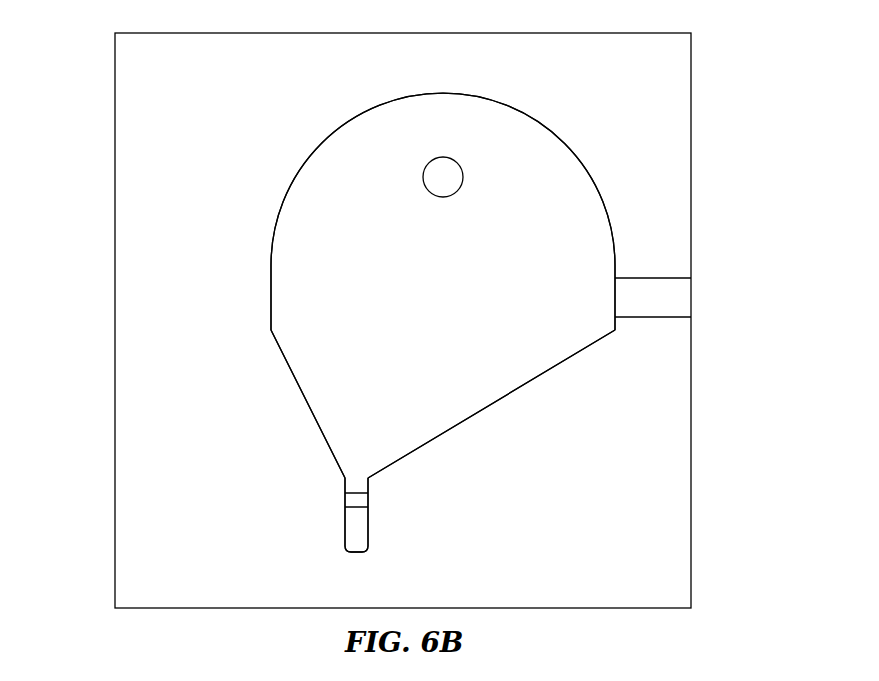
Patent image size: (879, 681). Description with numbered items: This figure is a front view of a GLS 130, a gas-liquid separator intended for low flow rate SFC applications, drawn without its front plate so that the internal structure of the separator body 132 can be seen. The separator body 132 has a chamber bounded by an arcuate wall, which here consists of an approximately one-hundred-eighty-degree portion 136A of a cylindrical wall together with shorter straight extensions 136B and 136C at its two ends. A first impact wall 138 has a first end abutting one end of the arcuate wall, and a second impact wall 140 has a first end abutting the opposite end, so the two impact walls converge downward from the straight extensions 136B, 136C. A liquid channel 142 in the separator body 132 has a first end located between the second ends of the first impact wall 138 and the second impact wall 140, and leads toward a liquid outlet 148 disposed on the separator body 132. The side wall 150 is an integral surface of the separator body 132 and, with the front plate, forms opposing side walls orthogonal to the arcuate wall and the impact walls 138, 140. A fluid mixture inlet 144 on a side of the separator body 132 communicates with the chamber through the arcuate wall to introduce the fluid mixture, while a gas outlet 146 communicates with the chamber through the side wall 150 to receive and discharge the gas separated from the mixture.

The GLS 130 is at (752, 147).
The separator body 132 is at (115, 247).
The 180° portion of a cylindrical wall 136A is at (360, 113).
The straight extension 136B is at (271, 297).
The straight extension 136C is at (614, 260).
The first impact wall 138 is at (540, 375).
The second impact wall 140 is at (315, 415).
The liquid channel 142 is at (360, 503).
The fluid mixture inlet 144 is at (692, 298).
The gas outlet 146 is at (447, 182).
The liquid outlet 148 is at (353, 548).
The side wall 150 is at (443, 322).